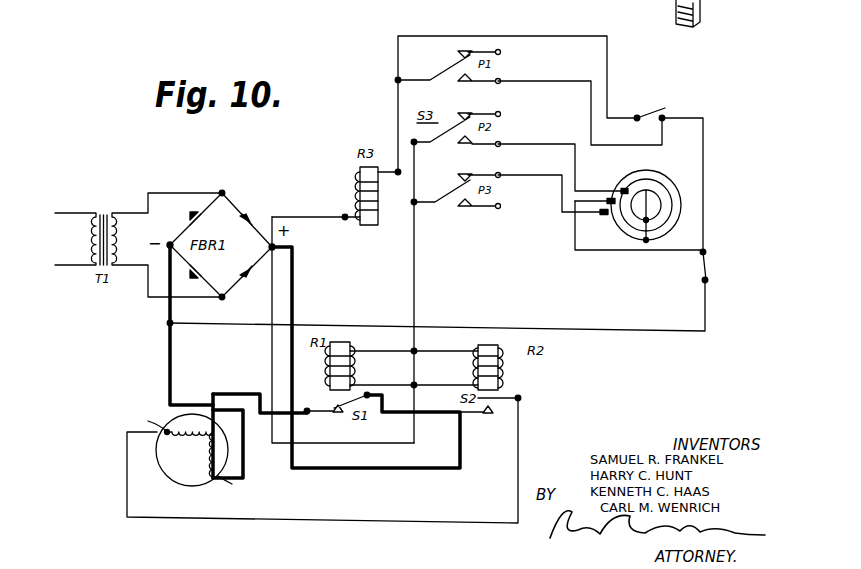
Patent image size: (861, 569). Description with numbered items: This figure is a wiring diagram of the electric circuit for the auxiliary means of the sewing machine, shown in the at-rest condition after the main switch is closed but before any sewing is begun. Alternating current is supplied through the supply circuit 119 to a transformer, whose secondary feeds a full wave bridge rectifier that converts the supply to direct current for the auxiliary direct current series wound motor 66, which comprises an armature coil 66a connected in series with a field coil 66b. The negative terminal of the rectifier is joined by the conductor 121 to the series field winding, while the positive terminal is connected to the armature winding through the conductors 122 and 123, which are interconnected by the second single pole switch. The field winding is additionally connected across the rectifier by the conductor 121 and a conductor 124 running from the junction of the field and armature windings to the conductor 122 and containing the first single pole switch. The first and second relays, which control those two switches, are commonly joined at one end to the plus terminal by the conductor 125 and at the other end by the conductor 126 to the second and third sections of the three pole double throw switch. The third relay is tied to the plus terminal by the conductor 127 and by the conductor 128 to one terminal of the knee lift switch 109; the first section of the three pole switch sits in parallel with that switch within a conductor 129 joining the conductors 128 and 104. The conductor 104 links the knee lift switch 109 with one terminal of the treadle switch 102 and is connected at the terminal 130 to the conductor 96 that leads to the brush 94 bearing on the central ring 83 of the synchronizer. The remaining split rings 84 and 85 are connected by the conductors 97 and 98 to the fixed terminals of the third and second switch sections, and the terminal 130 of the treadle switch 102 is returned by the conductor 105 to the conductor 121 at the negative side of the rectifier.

The alternating current supply circuit 119 is at (60, 210).
The conductor 121 is at (168, 344).
The conductor 122 is at (297, 288).
The conductor 123 is at (348, 520).
The conductor 124 is at (249, 387).
The conductor 125 is at (270, 303).
The conductor 126 is at (418, 276).
The conductor 127 is at (322, 218).
The conductor 128 is at (398, 108).
The conductor 129 is at (575, 73).
The knee lift switch 109 is at (694, 110).
The conductor wire 104 is at (706, 196).
The terminal of the treadle switch 130 is at (706, 254).
The treadle switch 102 is at (737, 261).
The conductor wire 105 is at (543, 329).
The conductor wire 98 is at (574, 162).
The conductor wire 97 is at (562, 197).
The conductor wire 96 is at (566, 232).
The electrical conductor ring 83 is at (620, 190).
The electrical conductor ring 84 is at (614, 228).
The electrical conductor ring 85 is at (676, 238).
The contact brush 94 is at (633, 190).
The auxiliary direct current series wound motor 66 is at (148, 455).
The armature coil 66a is at (190, 430).
The field coil 66b is at (210, 462).